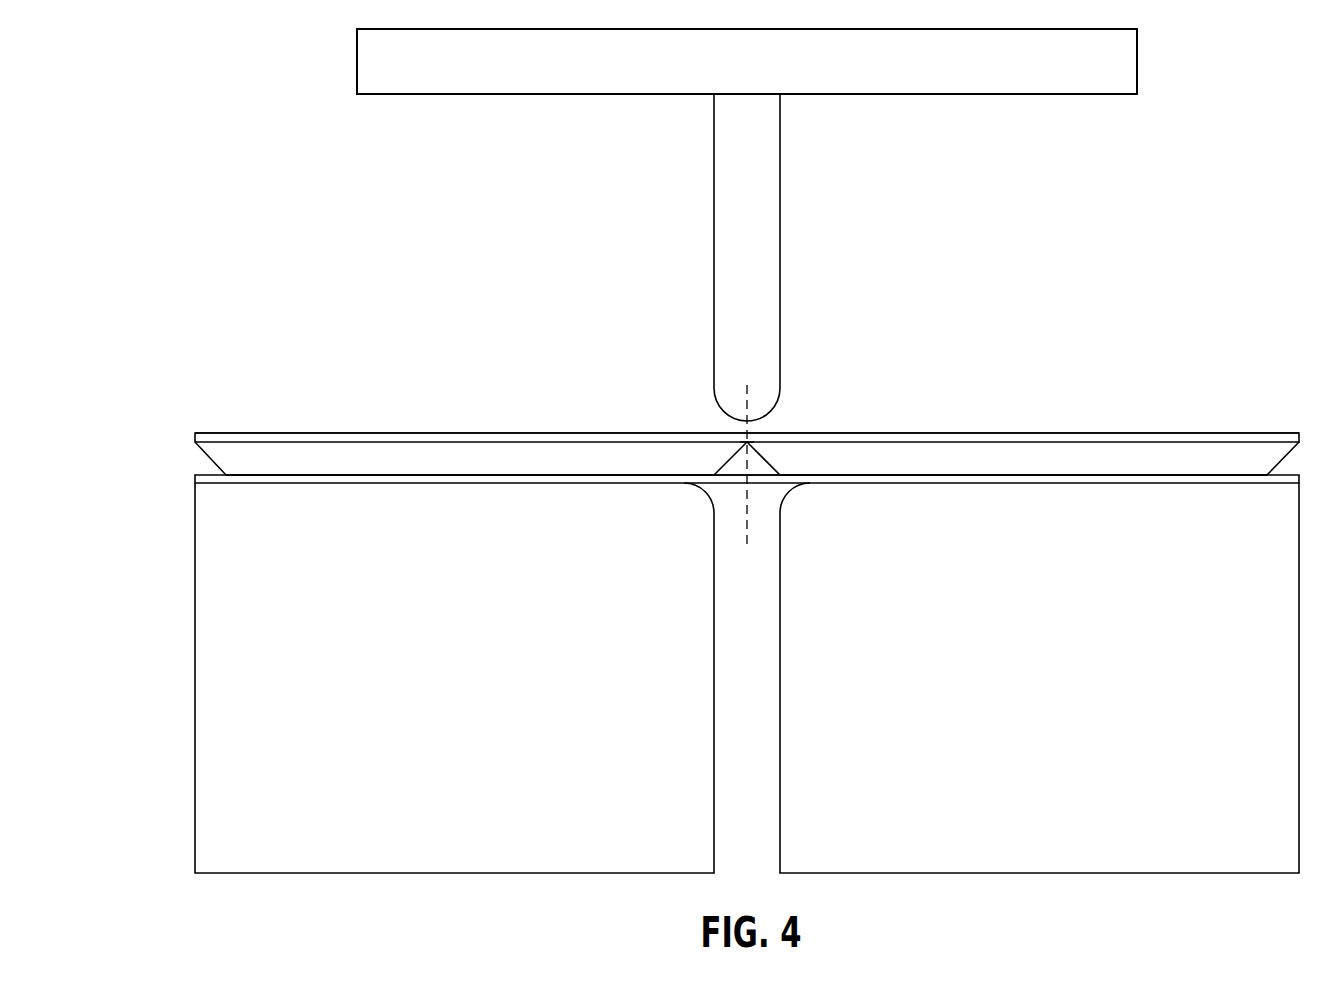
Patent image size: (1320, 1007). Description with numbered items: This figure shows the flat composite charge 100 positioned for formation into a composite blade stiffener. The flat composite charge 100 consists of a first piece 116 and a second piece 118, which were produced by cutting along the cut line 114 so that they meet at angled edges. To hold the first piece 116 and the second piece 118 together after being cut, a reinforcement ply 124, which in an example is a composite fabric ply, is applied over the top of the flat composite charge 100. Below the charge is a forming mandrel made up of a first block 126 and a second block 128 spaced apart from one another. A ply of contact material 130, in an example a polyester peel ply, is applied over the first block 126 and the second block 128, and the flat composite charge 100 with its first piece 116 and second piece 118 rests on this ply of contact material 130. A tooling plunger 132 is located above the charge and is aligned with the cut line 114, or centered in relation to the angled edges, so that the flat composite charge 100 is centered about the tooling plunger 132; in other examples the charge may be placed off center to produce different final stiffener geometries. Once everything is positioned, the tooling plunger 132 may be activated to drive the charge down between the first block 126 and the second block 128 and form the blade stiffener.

The flat composite charge 100 is at (192, 451).
The cut line 114 is at (749, 428).
The first piece 116 is at (392, 463).
The second piece 118 is at (1136, 463).
The reinforcement ply 124 is at (978, 437).
The first block 126 is at (362, 840).
The second block 128 is at (1039, 842).
The ply of contact material 130 is at (193, 479).
The tooling plunger 132 is at (748, 338).